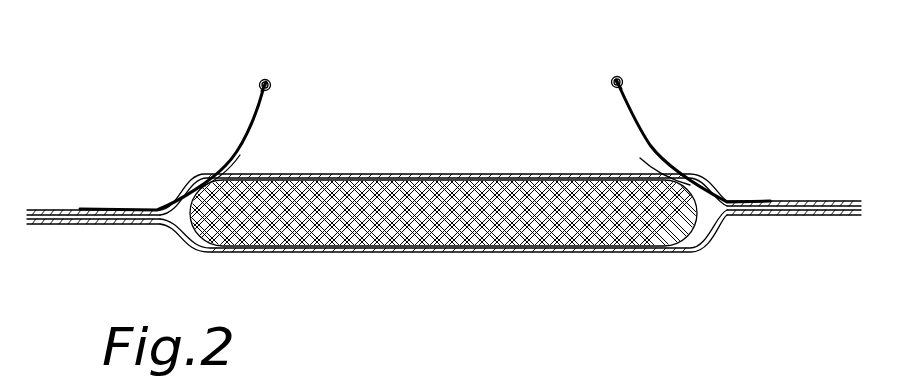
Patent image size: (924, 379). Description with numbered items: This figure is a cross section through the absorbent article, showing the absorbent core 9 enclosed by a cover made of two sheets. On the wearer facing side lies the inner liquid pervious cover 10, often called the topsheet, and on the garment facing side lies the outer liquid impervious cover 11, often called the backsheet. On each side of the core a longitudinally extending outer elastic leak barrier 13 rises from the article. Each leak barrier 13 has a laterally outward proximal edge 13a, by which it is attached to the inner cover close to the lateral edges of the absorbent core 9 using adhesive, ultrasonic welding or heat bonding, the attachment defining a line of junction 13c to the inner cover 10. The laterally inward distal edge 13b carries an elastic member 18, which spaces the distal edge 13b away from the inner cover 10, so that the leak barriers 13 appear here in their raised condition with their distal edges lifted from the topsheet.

The absorbent core 9 is at (453, 212).
The inner liquid pervious cover 10 is at (372, 174).
The outer liquid impervious cover 11 is at (397, 253).
The outer elastic leak barrier 13 is at (234, 147).
The proximal edge 13a is at (80, 208).
The distal edge 13b is at (273, 84).
The line of junction 13c is at (233, 173).
The elastic member 18 is at (260, 81).